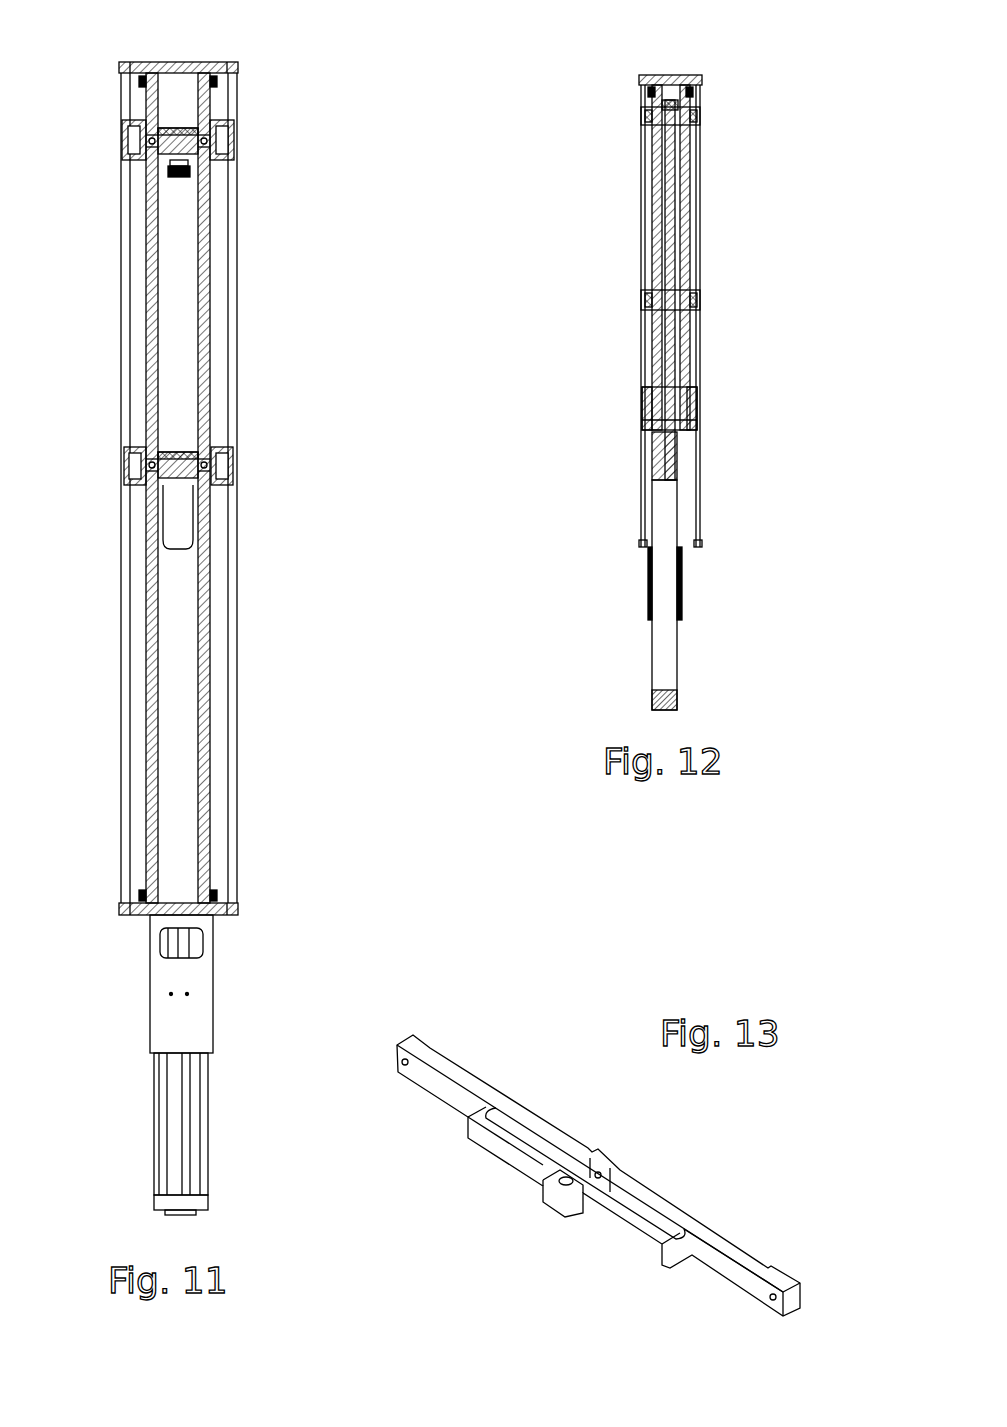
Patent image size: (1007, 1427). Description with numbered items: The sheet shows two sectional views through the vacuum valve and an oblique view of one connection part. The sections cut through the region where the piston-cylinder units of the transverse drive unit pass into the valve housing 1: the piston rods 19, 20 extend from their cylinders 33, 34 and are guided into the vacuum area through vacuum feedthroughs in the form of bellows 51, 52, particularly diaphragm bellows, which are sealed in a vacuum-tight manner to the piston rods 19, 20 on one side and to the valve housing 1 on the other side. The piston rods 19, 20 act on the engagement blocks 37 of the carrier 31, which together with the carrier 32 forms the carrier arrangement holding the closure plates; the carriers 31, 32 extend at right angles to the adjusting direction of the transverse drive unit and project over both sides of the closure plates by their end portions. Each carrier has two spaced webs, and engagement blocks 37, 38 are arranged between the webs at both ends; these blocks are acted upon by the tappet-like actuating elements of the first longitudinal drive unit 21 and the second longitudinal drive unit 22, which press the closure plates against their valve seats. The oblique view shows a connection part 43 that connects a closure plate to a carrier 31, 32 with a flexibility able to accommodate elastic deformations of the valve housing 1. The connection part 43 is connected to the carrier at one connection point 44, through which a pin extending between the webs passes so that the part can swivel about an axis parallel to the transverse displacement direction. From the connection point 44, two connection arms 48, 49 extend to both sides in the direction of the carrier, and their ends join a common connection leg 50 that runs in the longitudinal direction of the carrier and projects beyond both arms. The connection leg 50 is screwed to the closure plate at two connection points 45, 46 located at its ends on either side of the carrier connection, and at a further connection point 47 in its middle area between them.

In FIG. 11, the valve housing 1 is at (223, 483).
In FIG. 12, the valve housing 1 is at (703, 311).
In FIG. 12, the piston rod 19 is at (671, 253).
In FIG. 11, the piston rod 20 is at (215, 135).
In FIG. 11, the first longitudinal drive unit 21 is at (320, 488).
In FIG. 11, the second longitudinal drive unit 22 is at (75, 488).
In FIG. 11, the carrier 31 is at (181, 451).
In FIG. 11, the carrier 32 is at (218, 402).
In FIG. 12, the cylinder 33 is at (680, 665).
In FIG. 11, the cylinder 34 is at (183, 1128).
In FIG. 11, the engagement block 37 is at (167, 70).
In FIG. 12, the engagement block 37 is at (699, 98).
In FIG. 11, the engagement block 38 is at (165, 478).
In FIG. 13, the connection part 43 is at (598, 1175).
In FIG. 13, the connection point 44 is at (567, 1178).
In FIG. 13, the connection point 45 is at (408, 1058).
In FIG. 13, the connection point 46 is at (777, 1294).
In FIG. 13, the connection point 47 is at (602, 1172).
In FIG. 13, the connection arm 48 is at (505, 1140).
In FIG. 13, the connection arm 49 is at (655, 1222).
In FIG. 13, the connection leg 50 is at (735, 1246).
In FIG. 12, the bellows 51 is at (685, 155).
In FIG. 11, the bellows 52 is at (186, 166).